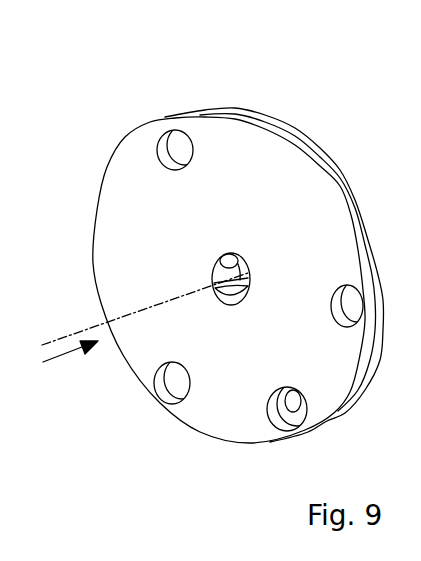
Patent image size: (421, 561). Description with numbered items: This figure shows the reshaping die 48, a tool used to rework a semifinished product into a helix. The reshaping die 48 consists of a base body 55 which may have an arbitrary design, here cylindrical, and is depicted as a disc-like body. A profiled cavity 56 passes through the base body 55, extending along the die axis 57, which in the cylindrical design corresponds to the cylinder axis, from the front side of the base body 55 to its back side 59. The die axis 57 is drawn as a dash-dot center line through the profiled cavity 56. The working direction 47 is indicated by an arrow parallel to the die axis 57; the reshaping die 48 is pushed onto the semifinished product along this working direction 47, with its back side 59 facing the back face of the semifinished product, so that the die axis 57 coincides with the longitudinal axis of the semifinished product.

The reshaping die 48 is at (98, 92).
The base body 55 is at (277, 170).
The back side 59 is at (142, 337).
The profiled cavity 56 is at (232, 306).
The die axis 57 is at (95, 322).
The working direction 47 is at (63, 352).